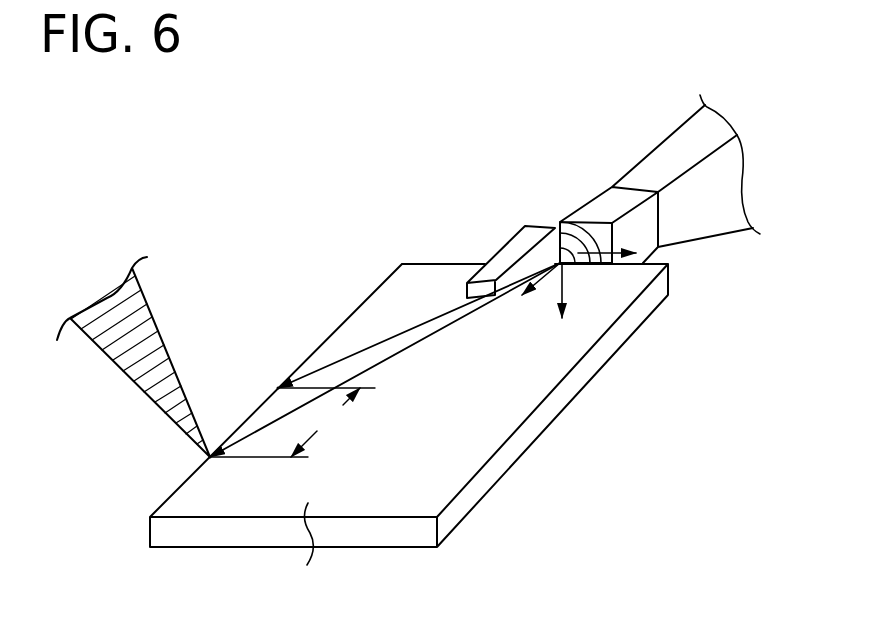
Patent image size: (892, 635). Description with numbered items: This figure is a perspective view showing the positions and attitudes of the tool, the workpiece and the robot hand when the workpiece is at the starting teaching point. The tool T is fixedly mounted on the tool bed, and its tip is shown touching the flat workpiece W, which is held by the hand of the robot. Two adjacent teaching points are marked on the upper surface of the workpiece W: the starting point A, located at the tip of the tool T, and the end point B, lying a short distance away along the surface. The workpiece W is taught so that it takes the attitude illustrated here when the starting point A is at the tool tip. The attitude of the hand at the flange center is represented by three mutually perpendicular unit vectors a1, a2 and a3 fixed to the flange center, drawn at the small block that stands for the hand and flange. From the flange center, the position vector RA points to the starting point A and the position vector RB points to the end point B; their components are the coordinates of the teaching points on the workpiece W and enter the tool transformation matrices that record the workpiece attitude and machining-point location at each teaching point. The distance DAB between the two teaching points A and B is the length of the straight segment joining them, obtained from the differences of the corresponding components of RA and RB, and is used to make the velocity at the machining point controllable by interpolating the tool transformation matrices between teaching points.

The tool T is at (160, 330).
The workpiece W is at (409, 434).
The starting point A is at (207, 457).
The end point B is at (277, 386).
The coordinates of teaching point A RA is at (466, 339).
The coordinates of teaching point B RB is at (417, 293).
The distance between teaching points A and B DAB is at (292, 422).
The unit vector a1 is at (537, 303).
The unit vector a2 is at (579, 326).
The unit vector a3 is at (652, 218).